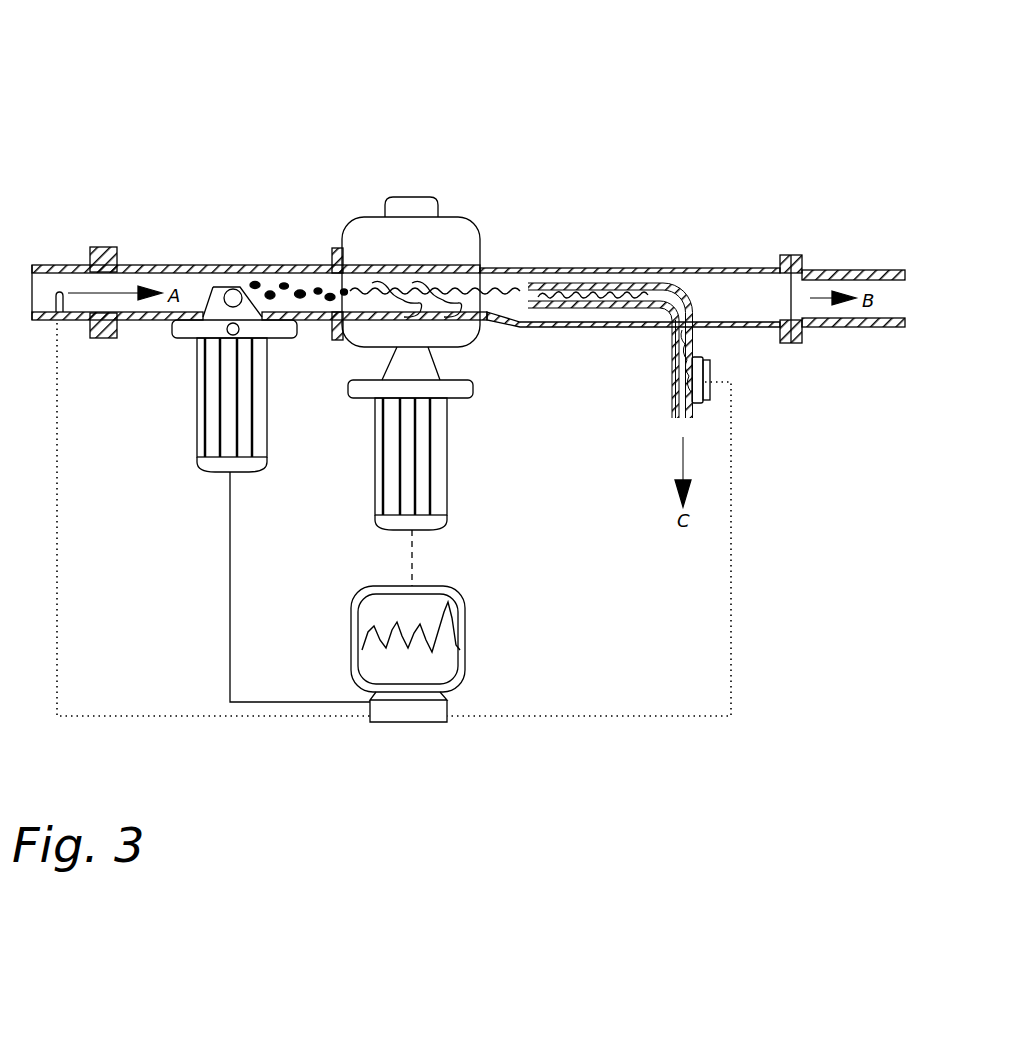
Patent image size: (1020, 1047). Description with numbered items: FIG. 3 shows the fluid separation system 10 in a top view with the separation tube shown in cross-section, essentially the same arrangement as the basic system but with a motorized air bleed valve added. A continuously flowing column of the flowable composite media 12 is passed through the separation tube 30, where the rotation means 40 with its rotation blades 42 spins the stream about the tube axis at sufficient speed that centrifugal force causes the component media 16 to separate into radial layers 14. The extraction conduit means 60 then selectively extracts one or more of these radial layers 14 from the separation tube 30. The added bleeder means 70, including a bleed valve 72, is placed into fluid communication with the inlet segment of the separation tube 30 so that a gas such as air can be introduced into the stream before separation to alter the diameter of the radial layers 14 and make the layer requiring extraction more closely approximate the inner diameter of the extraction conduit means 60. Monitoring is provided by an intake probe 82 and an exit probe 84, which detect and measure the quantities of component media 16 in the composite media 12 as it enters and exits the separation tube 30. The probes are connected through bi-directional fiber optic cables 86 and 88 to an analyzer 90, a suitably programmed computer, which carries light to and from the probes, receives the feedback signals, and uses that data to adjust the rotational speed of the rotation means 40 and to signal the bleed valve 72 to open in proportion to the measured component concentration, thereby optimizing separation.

The fluid separation system 10 is at (640, 58).
The flowable composite media 12 is at (316, 290).
The radial layers 14 is at (655, 287).
The component media 16 is at (497, 290).
The separation tube 30 is at (62, 265).
The rotation means 40 is at (410, 206).
The rotation blades 42 is at (449, 310).
The extraction conduit means 60 is at (593, 305).
The bleeder means 70 is at (258, 416).
The bleed valve 72 is at (230, 289).
The intake probe 82 is at (60, 330).
The exit probe 84 is at (710, 367).
The bi-directional fiber optic cable 86 is at (57, 643).
The bi-directional fiber optic cable 88 is at (733, 550).
The analyzer 90 is at (462, 620).